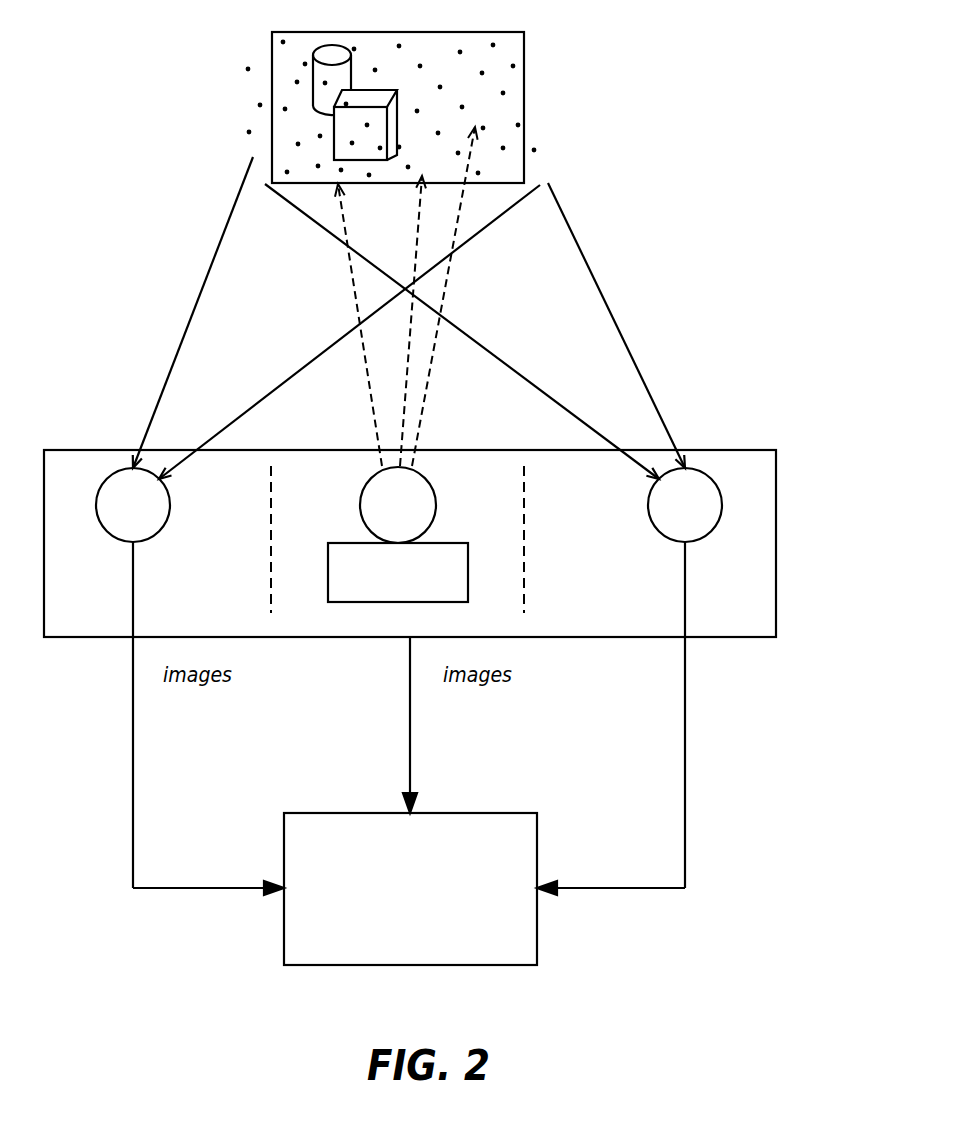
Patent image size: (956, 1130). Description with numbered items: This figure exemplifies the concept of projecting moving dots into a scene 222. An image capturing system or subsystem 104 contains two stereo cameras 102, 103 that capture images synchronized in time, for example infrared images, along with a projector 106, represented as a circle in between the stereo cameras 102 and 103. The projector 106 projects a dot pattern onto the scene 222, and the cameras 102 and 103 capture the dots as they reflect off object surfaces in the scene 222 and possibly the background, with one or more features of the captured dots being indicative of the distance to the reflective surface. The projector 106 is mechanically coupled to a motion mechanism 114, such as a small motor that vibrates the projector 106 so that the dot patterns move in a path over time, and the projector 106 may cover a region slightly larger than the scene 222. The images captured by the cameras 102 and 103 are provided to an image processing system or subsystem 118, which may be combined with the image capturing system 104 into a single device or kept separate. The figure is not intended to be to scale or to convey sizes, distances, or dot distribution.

The scene 222 is at (505, 118).
The stereo camera 102 is at (152, 518).
The stereo camera 103 is at (703, 520).
The projector 106 is at (417, 520).
The motion mechanism 114 is at (453, 562).
The image capturing system or subsystem 104 is at (729, 578).
The image processing system or subsystem 118 is at (493, 852).